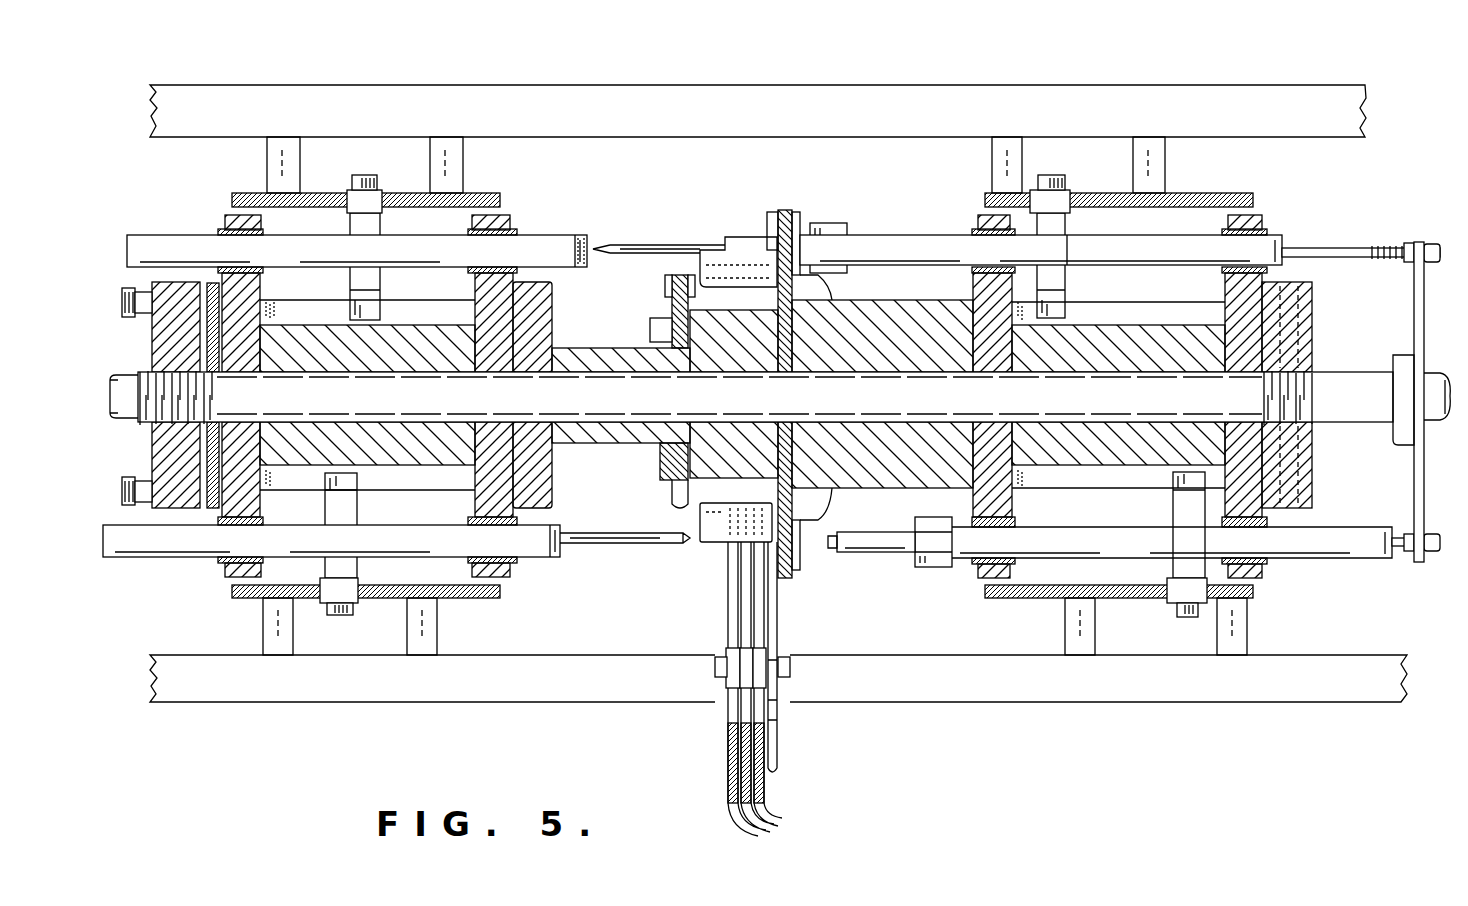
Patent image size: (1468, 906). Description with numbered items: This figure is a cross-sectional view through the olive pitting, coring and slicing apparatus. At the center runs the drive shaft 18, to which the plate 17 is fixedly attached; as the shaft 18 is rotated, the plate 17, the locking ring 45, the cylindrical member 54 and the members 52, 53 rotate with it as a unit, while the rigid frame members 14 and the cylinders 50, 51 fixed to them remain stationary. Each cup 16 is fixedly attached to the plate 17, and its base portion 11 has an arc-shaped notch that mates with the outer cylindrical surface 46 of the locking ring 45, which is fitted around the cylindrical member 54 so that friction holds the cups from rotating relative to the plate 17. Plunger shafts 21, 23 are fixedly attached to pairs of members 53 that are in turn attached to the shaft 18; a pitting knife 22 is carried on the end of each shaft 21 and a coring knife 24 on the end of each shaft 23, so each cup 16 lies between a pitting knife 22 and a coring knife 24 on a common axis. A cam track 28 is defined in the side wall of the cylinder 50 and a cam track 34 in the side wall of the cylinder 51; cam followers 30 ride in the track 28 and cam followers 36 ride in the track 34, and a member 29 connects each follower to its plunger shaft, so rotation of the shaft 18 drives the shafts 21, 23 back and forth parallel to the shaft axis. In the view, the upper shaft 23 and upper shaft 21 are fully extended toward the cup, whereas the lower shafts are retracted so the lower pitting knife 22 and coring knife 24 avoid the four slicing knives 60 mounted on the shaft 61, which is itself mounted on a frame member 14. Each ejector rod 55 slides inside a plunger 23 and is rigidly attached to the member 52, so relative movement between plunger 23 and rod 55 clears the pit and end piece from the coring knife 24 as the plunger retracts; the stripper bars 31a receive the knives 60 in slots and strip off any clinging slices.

The frame members 14 is at (548, 84).
The plunger shaft 21 is at (198, 236).
The cam follower 30 is at (348, 190).
The cam track 28 is at (386, 196).
The cylinder 50 is at (483, 193).
The pitting knife 22 is at (638, 245).
The cup 16 is at (705, 250).
The base portion 11 is at (768, 213).
The plate 17 is at (783, 210).
The outer cylindrical surface 46 is at (830, 240).
The plunger shaft 23 is at (918, 235).
The cam follower 36 is at (1034, 186).
The cam track 34 is at (1072, 196).
The cylinder 51 is at (1240, 193).
The ejector rod 55 is at (1345, 248).
The cylindrical member 54 is at (300, 325).
The member 29 is at (378, 285).
The members 53 is at (470, 290).
The drive shaft 18 is at (575, 350).
The locking ring 45 is at (828, 294).
The member 52 is at (1425, 310).
The coring knife 24 is at (890, 555).
The slicing knives 60 is at (758, 620).
The shaft 61 is at (722, 690).
The stripper bars 31a is at (775, 822).